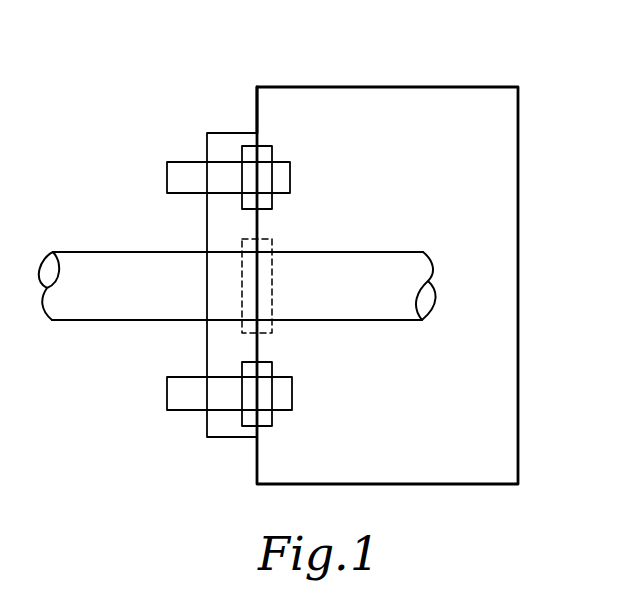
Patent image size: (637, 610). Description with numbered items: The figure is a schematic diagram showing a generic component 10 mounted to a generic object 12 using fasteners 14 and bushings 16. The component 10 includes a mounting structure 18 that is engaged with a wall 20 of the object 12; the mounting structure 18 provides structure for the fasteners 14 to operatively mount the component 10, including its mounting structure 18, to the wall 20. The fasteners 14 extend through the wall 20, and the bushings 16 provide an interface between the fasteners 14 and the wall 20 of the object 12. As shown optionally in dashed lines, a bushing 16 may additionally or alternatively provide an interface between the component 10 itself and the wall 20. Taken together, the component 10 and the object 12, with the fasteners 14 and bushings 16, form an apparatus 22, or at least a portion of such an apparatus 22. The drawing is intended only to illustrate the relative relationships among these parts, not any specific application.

The component 10 is at (77, 247).
The object 12 is at (384, 80).
The fasteners 14 is at (175, 162).
The bushings 16 is at (263, 146).
The mounting structure 18 is at (222, 133).
The wall 20 is at (257, 105).
The apparatus 22 is at (518, 66).